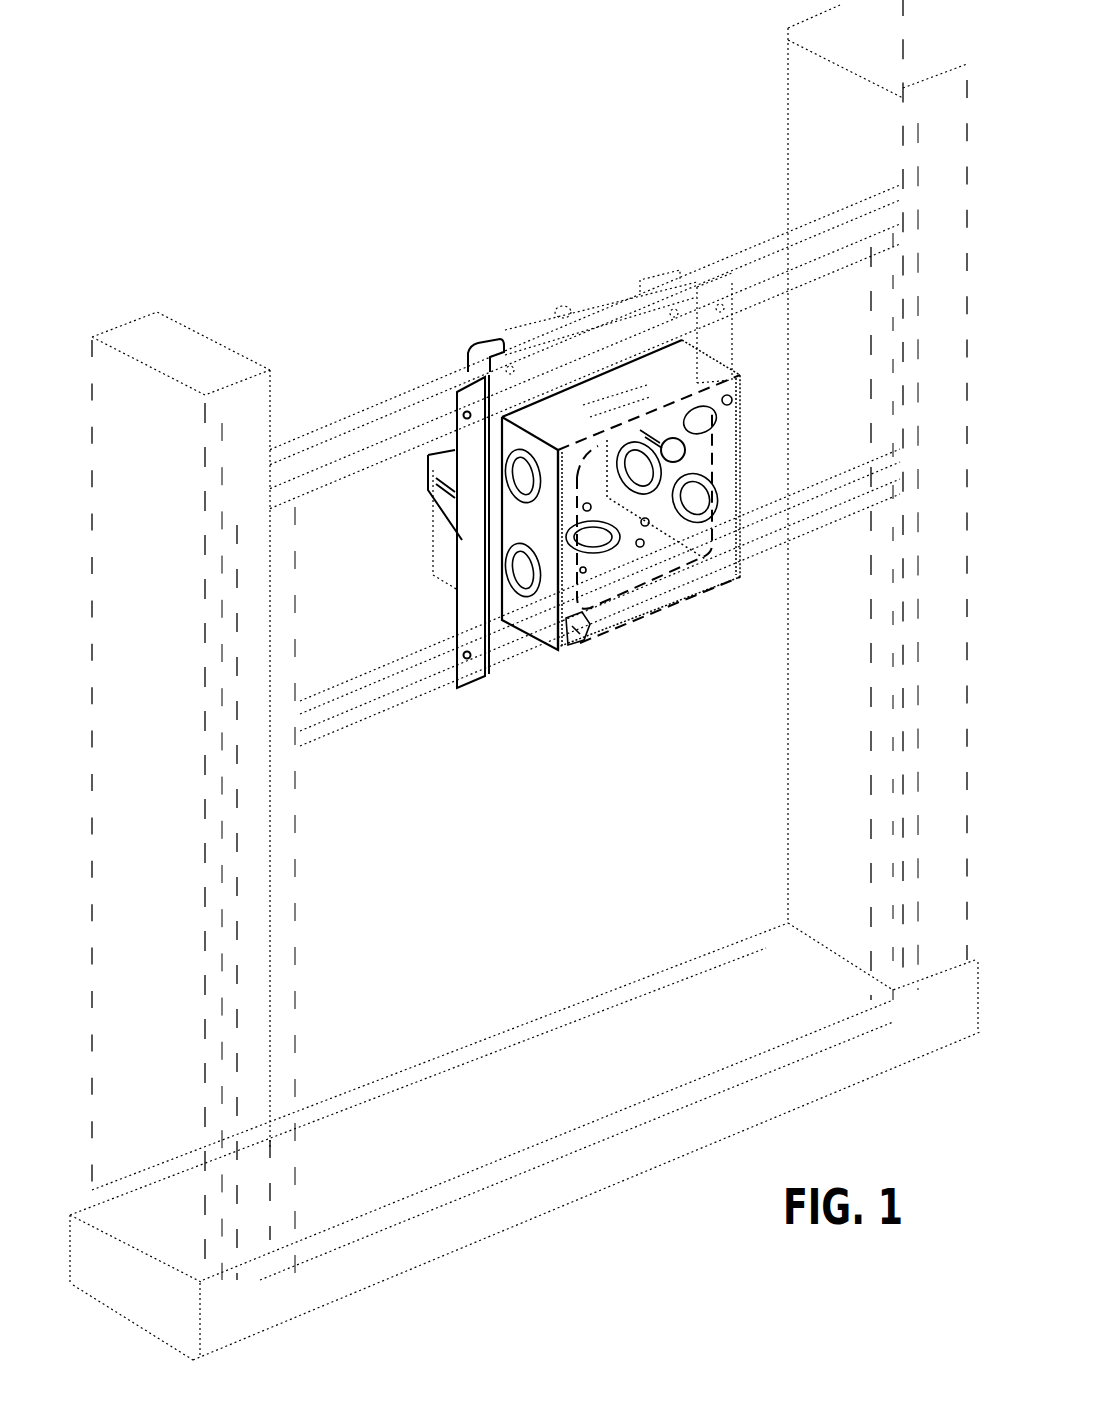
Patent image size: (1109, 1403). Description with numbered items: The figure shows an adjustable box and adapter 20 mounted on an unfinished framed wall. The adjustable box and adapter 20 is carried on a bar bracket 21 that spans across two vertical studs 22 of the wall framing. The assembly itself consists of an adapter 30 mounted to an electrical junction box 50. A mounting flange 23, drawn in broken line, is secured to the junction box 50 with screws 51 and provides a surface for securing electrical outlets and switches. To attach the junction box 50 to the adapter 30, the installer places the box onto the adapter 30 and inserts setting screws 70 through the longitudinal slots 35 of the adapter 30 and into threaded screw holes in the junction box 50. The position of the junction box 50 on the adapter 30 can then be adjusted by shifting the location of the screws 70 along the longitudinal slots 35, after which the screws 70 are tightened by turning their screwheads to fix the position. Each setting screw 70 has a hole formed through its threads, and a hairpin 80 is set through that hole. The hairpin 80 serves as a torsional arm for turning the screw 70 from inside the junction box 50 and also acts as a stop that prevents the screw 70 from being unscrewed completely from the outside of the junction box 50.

The adjustable box and adapter 20 is at (690, 659).
The bar bracket 21 is at (368, 410).
The vertical studs 22 is at (170, 477).
The mounting flange 23 is at (557, 473).
The adapter 30 is at (457, 617).
The longitudinal slots 35 is at (447, 490).
The electrical junction box 50 is at (637, 618).
The screws 51 is at (577, 635).
The setting screw 70 is at (663, 440).
The hairpin 80 is at (677, 440).